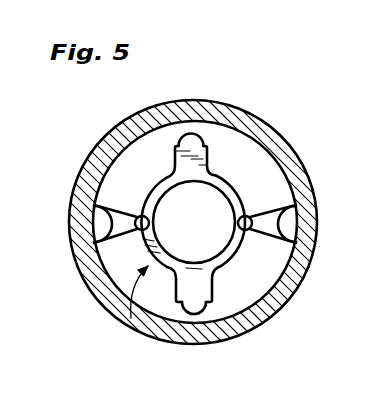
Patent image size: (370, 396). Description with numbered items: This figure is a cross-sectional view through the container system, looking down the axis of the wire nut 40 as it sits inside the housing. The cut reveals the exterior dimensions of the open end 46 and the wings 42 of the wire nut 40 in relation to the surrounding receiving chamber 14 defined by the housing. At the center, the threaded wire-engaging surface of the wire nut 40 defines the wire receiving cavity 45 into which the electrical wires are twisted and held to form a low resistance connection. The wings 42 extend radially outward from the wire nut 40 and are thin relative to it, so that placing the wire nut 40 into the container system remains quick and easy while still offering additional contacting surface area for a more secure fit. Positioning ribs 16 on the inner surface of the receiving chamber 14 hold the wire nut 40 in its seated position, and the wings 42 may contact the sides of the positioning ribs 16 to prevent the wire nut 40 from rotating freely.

The receiving chamber 14 is at (272, 193).
The positioning ribs 16 is at (216, 139).
The wire nut 40 is at (119, 323).
The wings 42 is at (207, 158).
The wire receiving cavity 45 is at (164, 209).
The open end 46 is at (162, 180).